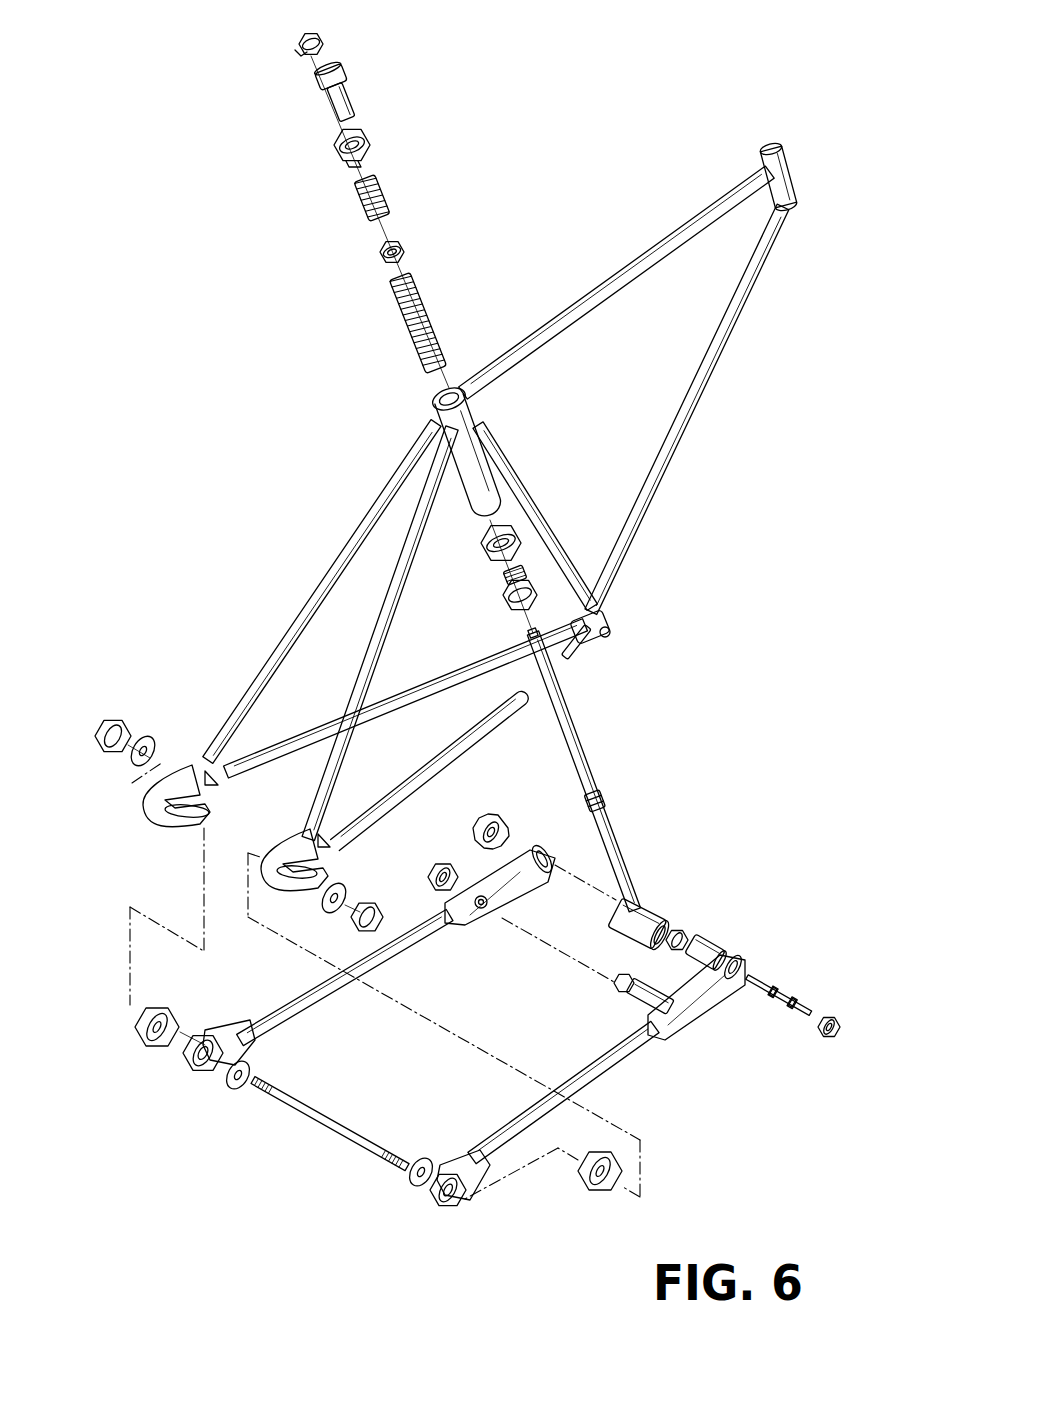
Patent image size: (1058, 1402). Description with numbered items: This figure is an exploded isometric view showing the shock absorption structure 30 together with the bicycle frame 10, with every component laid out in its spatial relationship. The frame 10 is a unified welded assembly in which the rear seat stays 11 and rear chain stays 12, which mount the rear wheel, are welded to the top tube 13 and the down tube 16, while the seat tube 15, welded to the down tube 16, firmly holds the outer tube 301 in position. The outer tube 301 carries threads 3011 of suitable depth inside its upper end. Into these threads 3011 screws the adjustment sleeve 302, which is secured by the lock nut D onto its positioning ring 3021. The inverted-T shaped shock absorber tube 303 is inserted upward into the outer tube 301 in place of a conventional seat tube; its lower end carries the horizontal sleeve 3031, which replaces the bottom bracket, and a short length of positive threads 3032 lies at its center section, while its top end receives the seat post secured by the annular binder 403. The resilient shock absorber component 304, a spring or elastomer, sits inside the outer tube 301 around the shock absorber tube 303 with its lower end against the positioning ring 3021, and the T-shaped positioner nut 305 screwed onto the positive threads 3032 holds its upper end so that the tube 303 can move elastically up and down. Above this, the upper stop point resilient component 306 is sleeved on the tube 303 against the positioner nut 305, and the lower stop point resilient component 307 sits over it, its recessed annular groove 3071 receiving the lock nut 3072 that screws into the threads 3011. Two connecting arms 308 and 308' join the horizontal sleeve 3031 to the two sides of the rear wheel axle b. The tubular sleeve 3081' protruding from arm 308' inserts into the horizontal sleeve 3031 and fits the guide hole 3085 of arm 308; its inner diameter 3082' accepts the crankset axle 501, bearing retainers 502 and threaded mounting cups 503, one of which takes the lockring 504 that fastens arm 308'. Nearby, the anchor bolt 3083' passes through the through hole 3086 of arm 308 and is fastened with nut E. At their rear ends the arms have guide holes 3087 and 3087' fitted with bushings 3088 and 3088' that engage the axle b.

The bicycle frame 10 is at (600, 158).
The seat stays 11 is at (383, 621).
The chain stays 12 is at (420, 782).
The top tube 13 is at (662, 247).
The seat tube 15 is at (534, 517).
The down tube 16 is at (672, 450).
The shock absorption structure 30 is at (439, 357).
The outer tube 301 is at (473, 463).
The threads 3011 is at (453, 387).
The adjustment sleeve 302 is at (503, 604).
The positioning ring 3021 is at (503, 578).
The shock absorber tube 303 is at (636, 789).
The horizontal sleeve 3031 is at (655, 904).
The positive threads 3032 is at (609, 796).
The resilient shock absorber component 304 is at (419, 296).
The positioner nut 305 is at (404, 245).
The upper stop point resilient component 306 is at (384, 184).
The lower stop point resilient component 307 is at (325, 88).
The recessed annular groove 3071 is at (322, 95).
The lock nut 3072 is at (333, 155).
The connecting arm 308 is at (393, 954).
The connecting arm 308' is at (652, 1051).
The tubular sleeve 3081' is at (751, 928).
The inner diameter 3082' is at (794, 941).
The anchor bolt 3083' is at (605, 998).
The guide hole 3085 is at (546, 873).
The through hole 3086 is at (480, 906).
The guide hole 3087 is at (180, 1104).
The guide hole 3087' is at (439, 1217).
The bushing 3088 is at (141, 1061).
The bushing 3088' is at (571, 1195).
The annular binder 403 is at (325, 38).
The axle 501 is at (799, 1008).
The bearing retainers 502 is at (788, 1005).
The threaded mounting cups 503 is at (685, 932).
The lockring 504 is at (498, 812).
The lock nut D is at (480, 550).
The nut E is at (434, 862).
The axle b is at (357, 1133).